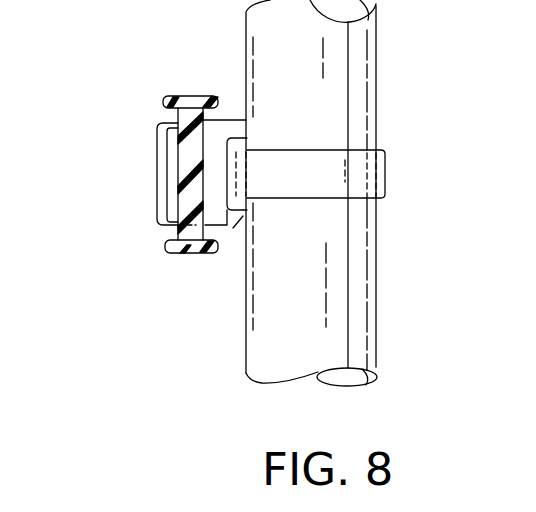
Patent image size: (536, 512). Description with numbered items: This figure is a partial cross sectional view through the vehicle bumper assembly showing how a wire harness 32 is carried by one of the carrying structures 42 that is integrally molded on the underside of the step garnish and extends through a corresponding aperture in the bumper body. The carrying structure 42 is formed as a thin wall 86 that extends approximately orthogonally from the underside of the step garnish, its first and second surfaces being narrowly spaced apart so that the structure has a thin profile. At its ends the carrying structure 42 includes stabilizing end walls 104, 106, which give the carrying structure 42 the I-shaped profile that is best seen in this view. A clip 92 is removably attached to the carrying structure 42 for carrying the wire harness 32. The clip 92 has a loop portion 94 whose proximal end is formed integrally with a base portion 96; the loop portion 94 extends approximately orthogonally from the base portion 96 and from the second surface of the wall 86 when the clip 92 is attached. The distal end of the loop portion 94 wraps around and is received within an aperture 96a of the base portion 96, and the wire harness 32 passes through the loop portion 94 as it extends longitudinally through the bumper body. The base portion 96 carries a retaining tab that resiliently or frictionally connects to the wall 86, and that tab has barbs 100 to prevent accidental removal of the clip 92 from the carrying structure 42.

The wire harness 32 is at (372, 32).
The carrying structure 42 is at (185, 252).
The wall 86 is at (186, 157).
The clip 92 is at (236, 116).
The loop portion 94 is at (384, 171).
The base portion 96 is at (231, 215).
The aperture 96a is at (240, 145).
The barbs 100 is at (173, 145).
The stabilizing end wall 104 is at (190, 246).
The stabilizing end wall 106 is at (192, 98).